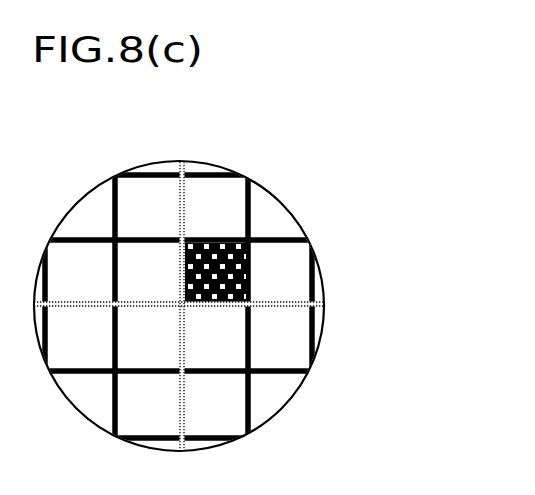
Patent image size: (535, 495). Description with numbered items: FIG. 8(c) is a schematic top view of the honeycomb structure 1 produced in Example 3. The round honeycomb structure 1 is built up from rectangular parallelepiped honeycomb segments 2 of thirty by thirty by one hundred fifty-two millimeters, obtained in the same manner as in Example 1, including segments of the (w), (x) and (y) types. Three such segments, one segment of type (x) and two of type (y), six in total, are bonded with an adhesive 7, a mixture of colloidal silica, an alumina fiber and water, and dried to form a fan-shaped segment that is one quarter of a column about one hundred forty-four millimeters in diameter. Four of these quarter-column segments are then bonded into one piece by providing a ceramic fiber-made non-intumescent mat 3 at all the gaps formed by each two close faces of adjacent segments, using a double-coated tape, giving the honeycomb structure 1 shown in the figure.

The honeycomb structure 1 is at (195, 144).
The honeycomb segment 2 is at (267, 240).
The adhesive 7 is at (250, 330).
The ceramic fiber-made non-intumescent mat 3 is at (190, 405).